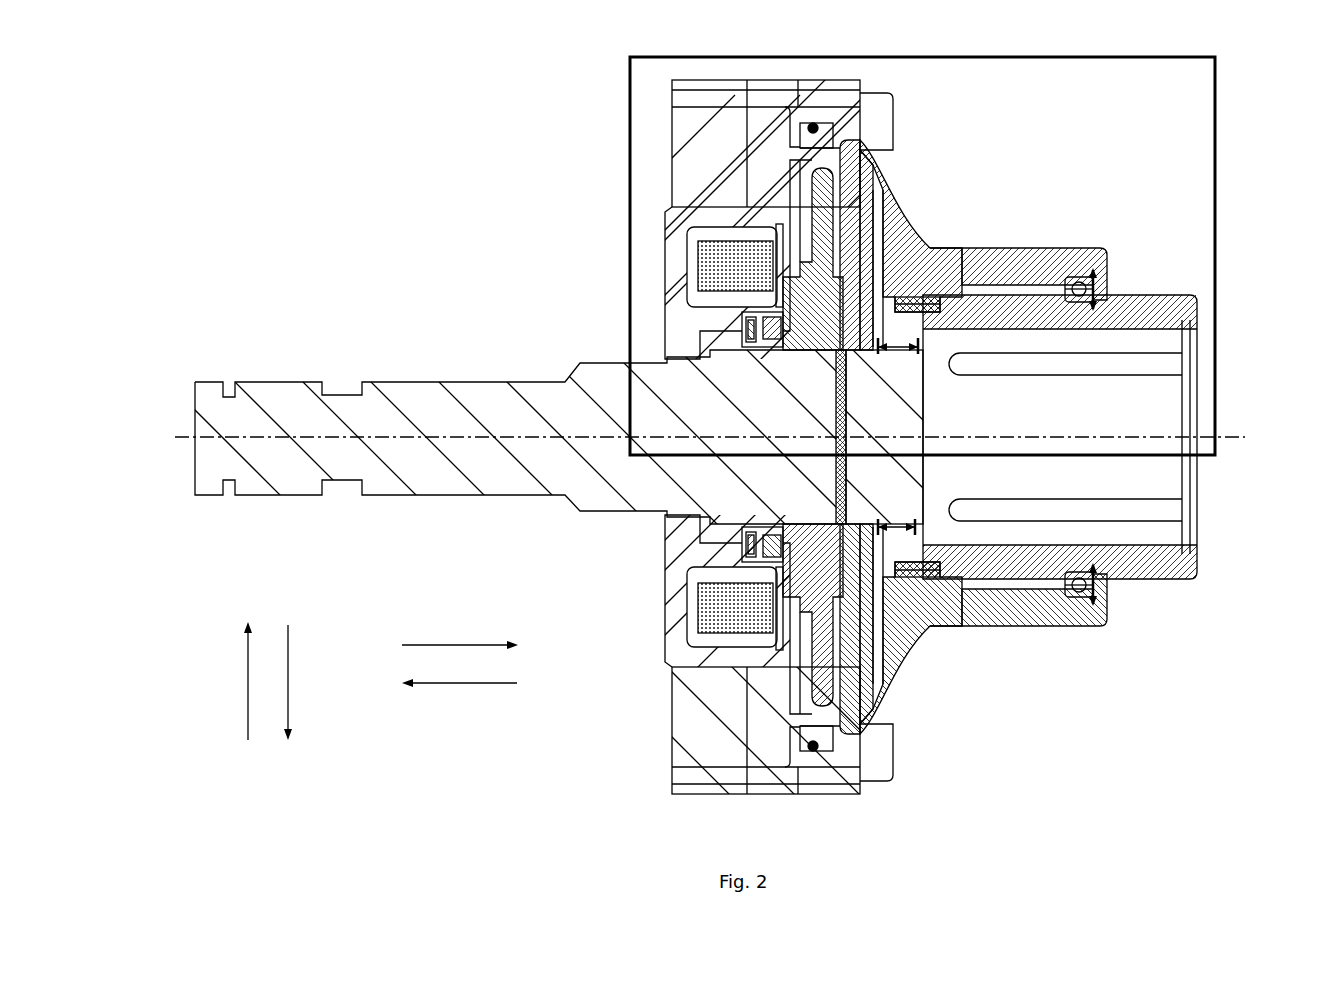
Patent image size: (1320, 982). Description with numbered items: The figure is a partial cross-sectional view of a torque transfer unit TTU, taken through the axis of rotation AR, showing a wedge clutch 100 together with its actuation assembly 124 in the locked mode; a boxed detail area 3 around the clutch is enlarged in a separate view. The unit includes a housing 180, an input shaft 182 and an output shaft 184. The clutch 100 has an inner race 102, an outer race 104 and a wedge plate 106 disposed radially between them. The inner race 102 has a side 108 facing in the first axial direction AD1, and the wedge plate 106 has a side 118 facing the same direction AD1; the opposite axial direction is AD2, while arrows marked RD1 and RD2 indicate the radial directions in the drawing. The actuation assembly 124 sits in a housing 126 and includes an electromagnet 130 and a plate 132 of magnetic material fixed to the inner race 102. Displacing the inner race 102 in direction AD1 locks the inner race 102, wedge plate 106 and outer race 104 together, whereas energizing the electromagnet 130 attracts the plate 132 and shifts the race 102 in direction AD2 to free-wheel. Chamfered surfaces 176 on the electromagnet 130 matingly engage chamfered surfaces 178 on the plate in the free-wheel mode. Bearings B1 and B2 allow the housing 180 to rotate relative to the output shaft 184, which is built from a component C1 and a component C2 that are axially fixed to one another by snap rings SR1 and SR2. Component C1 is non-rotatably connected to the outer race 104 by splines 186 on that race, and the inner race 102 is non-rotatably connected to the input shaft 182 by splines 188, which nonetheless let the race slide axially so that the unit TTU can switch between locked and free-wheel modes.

The detail area 3 is at (630, 95).
The wedge clutch 100 is at (885, 170).
The inner race 102 is at (812, 352).
The outer race 104 is at (852, 200).
The wedge plate 106 is at (817, 185).
The side of inner race 108 is at (898, 359).
The side of wedge plate 118 is at (866, 250).
The actuation assembly 124 is at (719, 325).
The housing 126 is at (788, 147).
The electromagnet 130 is at (705, 270).
The plate 132 is at (790, 207).
The chamfered surfaces 176 is at (770, 645).
The chamfered surfaces 178 is at (778, 568).
The housing 180 is at (1030, 248).
The input shaft 182 is at (205, 470).
The output shaft 184 is at (1133, 305).
The splines 186 is at (840, 522).
The splines 188 is at (758, 526).
The axis of rotation AR is at (186, 437).
The torque transfer unit TTU is at (514, 210).
The bearing B1 is at (1078, 278).
The bearing B2 is at (906, 297).
The component of output shaft C1 is at (925, 411).
The component of output shaft C2 is at (1200, 345).
The snap ring SR1 is at (880, 519).
The snap ring SR2 is at (915, 519).
The radial direction 1 RD1 is at (248, 680).
The radial direction 2 RD2 is at (288, 659).
The first axial direction AD1 is at (437, 645).
The second axial direction AD2 is at (458, 685).